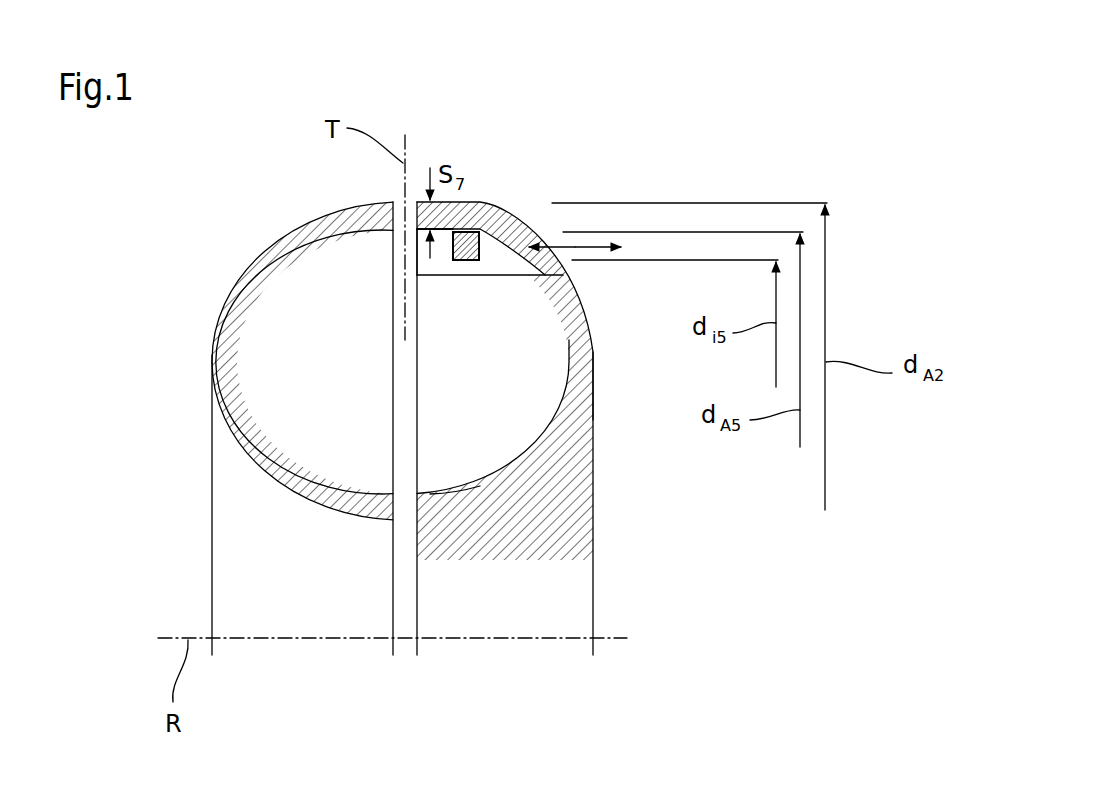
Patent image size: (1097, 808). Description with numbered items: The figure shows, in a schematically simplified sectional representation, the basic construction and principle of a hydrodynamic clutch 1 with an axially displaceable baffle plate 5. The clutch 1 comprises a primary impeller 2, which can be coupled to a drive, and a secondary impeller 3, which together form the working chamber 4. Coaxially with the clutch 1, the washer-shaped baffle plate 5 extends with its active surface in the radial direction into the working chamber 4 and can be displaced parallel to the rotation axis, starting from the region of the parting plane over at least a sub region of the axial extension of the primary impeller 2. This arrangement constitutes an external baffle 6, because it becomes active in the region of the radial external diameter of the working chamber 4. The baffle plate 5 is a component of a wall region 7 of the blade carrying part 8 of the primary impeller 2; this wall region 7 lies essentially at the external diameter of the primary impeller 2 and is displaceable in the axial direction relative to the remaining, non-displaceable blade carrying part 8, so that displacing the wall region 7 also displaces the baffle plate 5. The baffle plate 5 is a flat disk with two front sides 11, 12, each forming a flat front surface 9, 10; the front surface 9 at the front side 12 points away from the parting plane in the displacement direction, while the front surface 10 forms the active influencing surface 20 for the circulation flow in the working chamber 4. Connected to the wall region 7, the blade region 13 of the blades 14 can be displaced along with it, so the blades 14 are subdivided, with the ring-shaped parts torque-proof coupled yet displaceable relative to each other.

The hydrodynamic clutch 1 is at (422, 103).
The primary impeller 2 is at (573, 525).
The secondary impeller 3 is at (230, 518).
The working chamber 4 is at (344, 368).
The baffle plate 5 is at (461, 238).
The external baffle 6 is at (491, 234).
The wall region 7 is at (527, 222).
The blade carrying part 8 is at (582, 343).
The front surface 9 is at (453, 240).
The front surface 10 is at (478, 250).
The front side 11 is at (451, 293).
The front side 12 is at (488, 316).
The blade region 13 is at (423, 251).
The blades 14 is at (458, 473).
The influencing surface 20 is at (501, 316).